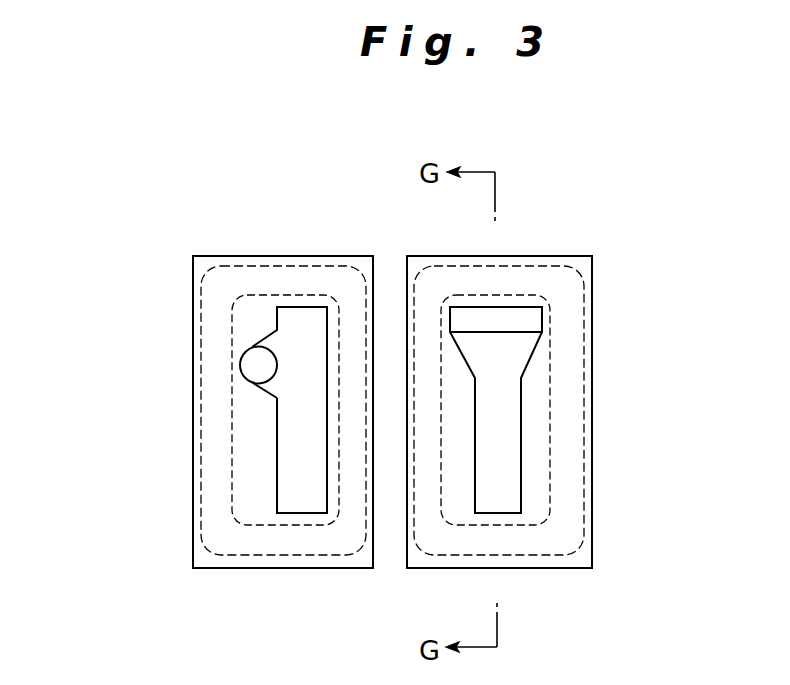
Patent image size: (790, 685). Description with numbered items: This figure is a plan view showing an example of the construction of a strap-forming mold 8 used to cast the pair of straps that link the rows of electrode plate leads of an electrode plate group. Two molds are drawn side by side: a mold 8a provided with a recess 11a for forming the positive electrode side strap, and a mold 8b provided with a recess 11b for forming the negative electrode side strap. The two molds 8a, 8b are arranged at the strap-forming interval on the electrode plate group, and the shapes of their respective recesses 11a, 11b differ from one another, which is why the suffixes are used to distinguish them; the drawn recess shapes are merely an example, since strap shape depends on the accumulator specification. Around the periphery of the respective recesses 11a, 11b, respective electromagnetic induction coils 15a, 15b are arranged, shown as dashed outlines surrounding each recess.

The mold 8 is at (353, 234).
The mold 8a is at (592, 293).
The mold 8b is at (193, 307).
The recess 11a is at (497, 435).
The recess 11b is at (288, 478).
The electromagnetic induction coil 15a is at (565, 390).
The electromagnetic induction coil 15b is at (215, 412).